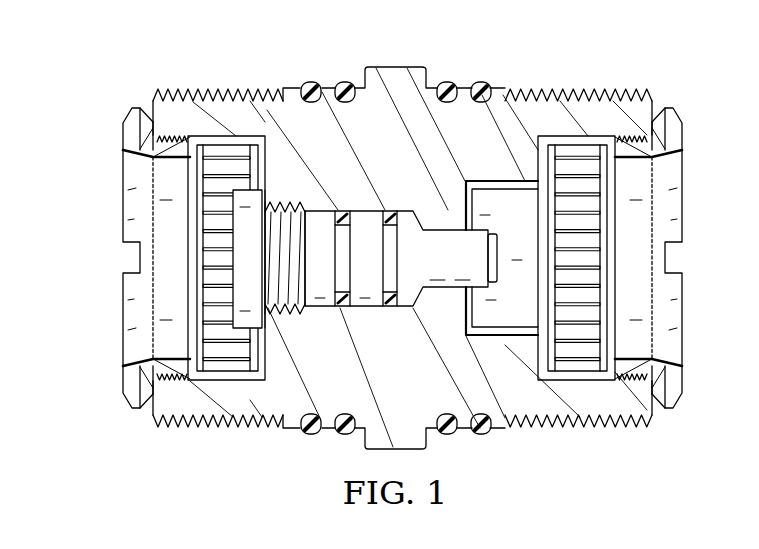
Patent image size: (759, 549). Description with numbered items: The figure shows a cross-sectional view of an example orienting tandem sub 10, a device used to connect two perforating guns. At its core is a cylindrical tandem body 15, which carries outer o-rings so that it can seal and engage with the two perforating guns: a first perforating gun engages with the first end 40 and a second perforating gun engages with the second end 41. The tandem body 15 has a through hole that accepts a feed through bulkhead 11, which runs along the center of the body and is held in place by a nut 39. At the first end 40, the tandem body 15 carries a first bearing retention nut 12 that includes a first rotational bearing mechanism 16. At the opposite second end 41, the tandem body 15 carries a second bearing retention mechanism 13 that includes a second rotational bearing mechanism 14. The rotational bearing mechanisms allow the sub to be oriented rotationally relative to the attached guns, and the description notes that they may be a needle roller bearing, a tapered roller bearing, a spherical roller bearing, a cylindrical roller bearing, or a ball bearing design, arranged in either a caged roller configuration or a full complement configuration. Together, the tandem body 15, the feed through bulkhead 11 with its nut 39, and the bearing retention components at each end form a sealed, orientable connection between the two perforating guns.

The orienting tandem sub 10 is at (401, 226).
The feed through bulkhead 11 is at (363, 315).
The first bearing retention nut 12 is at (673, 132).
The second bearing retention mechanism 13 is at (130, 131).
The second rotational bearing mechanism 14 is at (212, 274).
The tandem body 15 is at (238, 118).
The first rotational bearing mechanism 16 is at (593, 273).
The nut 39 is at (247, 237).
The first end 40 is at (652, 93).
The second end 41 is at (143, 95).